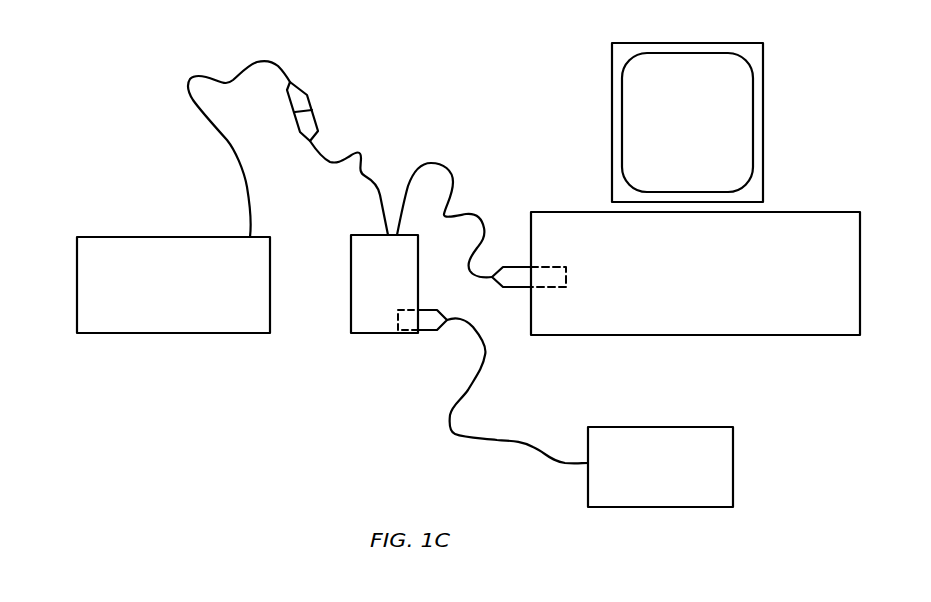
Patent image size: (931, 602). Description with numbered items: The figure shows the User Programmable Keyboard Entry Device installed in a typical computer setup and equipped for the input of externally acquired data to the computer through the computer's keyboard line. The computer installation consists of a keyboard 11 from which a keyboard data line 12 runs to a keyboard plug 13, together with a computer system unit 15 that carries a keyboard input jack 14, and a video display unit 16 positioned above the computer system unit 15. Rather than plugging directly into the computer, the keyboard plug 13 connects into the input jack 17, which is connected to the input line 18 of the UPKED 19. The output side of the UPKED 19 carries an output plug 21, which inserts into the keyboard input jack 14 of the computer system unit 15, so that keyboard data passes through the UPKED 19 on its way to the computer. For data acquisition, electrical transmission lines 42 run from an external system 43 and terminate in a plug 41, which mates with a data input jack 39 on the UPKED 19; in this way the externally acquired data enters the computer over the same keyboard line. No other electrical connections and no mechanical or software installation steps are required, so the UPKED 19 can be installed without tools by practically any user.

The keyboard 11 is at (160, 248).
The keyboard data line 12 is at (257, 62).
The keyboard plug 13 is at (302, 93).
The keyboard input jack 14 is at (558, 270).
The computer system unit 15 is at (813, 230).
The video display unit 16 is at (730, 90).
The input jack 17 is at (308, 122).
The input line 18 is at (378, 193).
The UPKED 19 is at (367, 325).
The output plug 21 is at (515, 277).
The data input jack 39 is at (412, 320).
The plug 41 is at (438, 320).
The electrical transmission lines 42 is at (473, 430).
The external system 43 is at (710, 482).